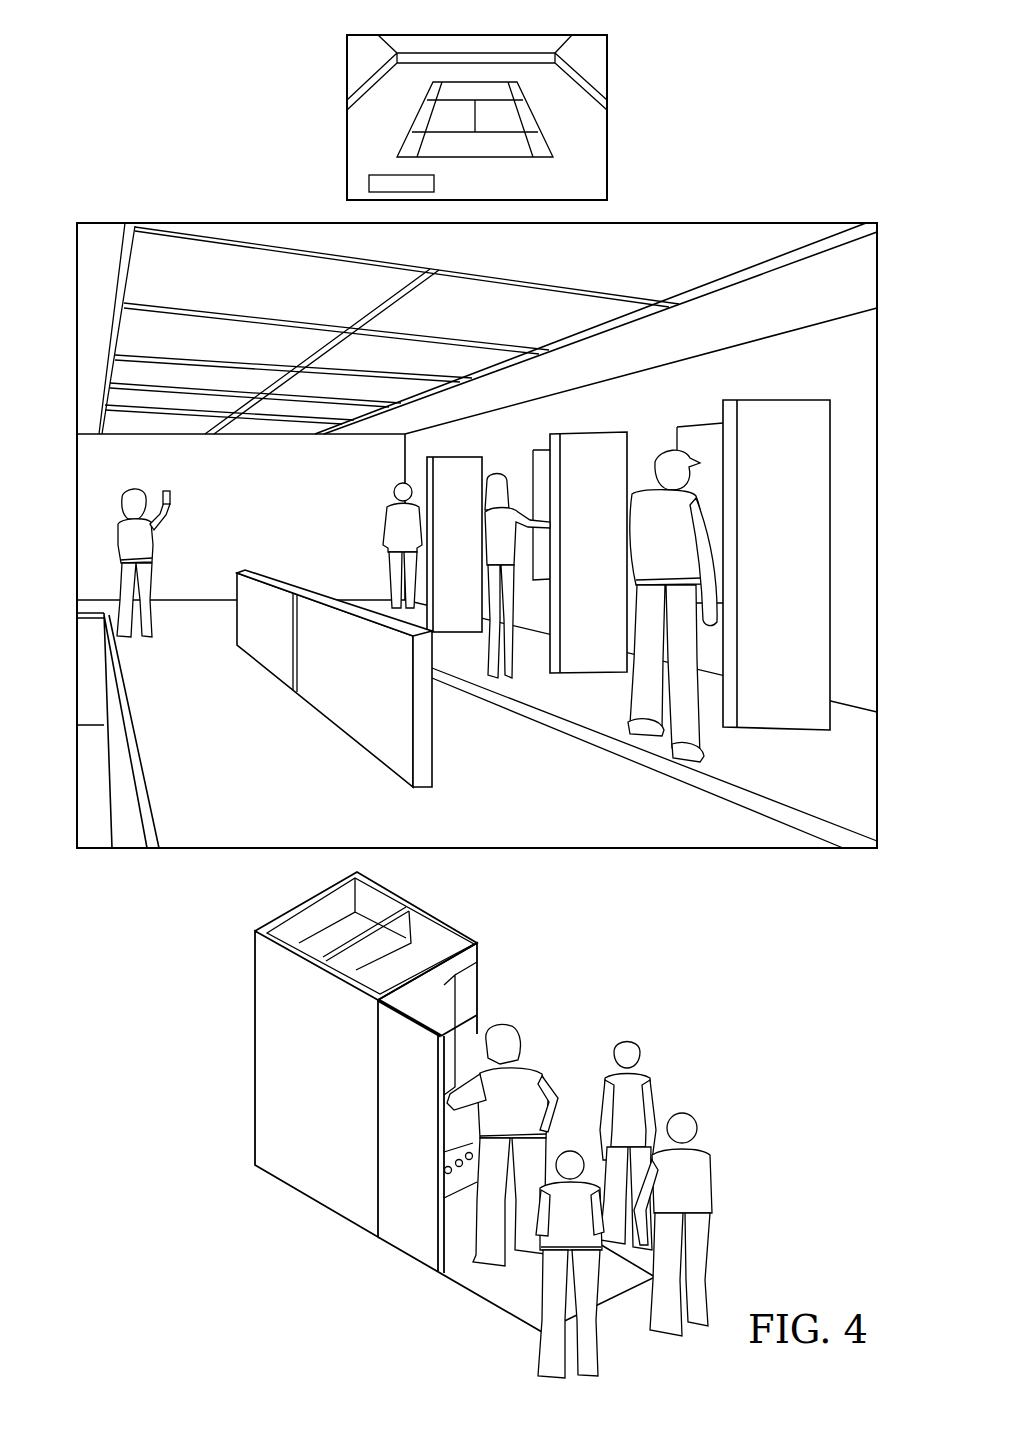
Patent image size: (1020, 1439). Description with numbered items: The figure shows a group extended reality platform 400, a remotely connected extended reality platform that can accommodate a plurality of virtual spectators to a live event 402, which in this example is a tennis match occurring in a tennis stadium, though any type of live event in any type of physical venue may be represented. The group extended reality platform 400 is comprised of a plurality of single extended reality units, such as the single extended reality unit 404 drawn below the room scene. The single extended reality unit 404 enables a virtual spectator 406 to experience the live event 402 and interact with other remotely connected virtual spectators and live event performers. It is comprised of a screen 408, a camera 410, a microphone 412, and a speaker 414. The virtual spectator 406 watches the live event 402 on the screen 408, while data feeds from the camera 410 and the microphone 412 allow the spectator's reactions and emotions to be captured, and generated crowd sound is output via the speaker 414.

The group extended reality platform 400 is at (728, 223).
The live event 402 is at (347, 96).
The single extended reality unit 404 is at (255, 1088).
The virtual spectator 406 is at (537, 1067).
The screen 408 is at (455, 1000).
The camera 410 is at (465, 1152).
The microphone 412 is at (460, 1168).
The speaker 414 is at (442, 1213).